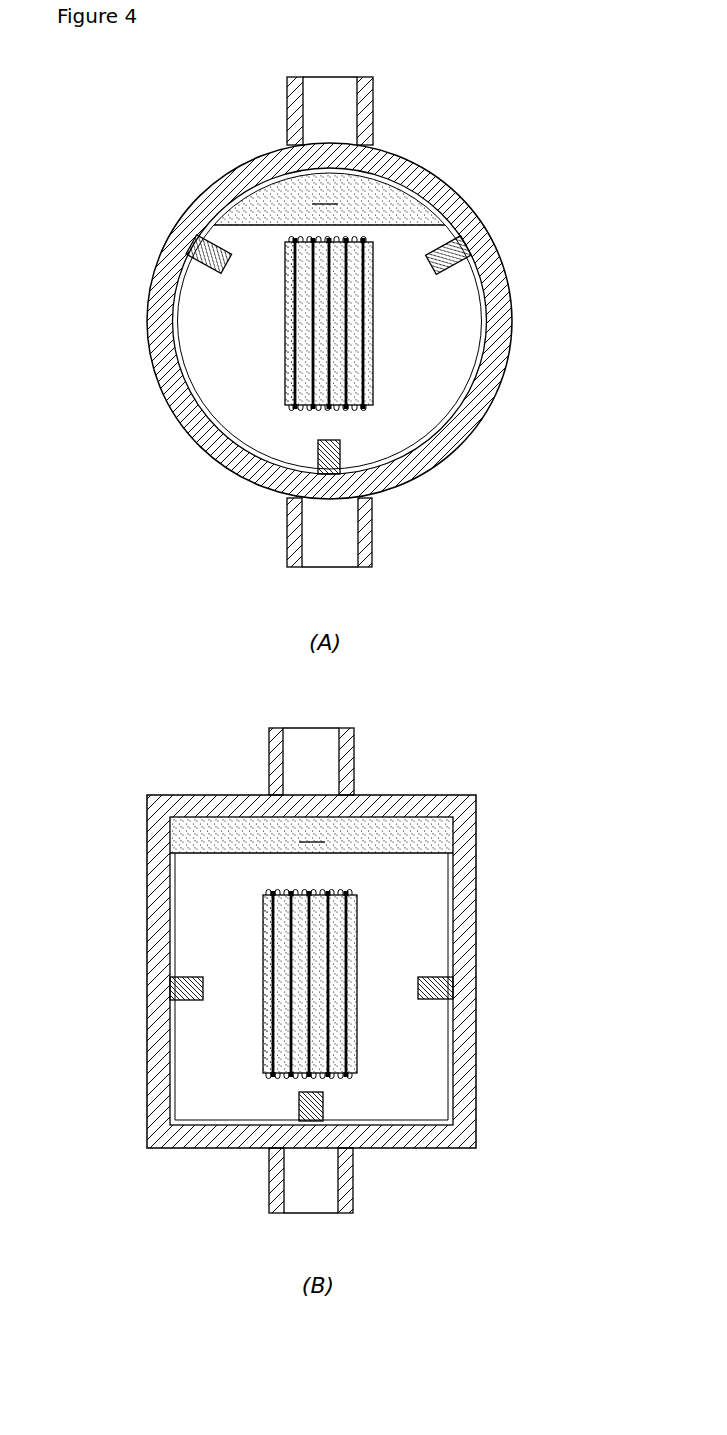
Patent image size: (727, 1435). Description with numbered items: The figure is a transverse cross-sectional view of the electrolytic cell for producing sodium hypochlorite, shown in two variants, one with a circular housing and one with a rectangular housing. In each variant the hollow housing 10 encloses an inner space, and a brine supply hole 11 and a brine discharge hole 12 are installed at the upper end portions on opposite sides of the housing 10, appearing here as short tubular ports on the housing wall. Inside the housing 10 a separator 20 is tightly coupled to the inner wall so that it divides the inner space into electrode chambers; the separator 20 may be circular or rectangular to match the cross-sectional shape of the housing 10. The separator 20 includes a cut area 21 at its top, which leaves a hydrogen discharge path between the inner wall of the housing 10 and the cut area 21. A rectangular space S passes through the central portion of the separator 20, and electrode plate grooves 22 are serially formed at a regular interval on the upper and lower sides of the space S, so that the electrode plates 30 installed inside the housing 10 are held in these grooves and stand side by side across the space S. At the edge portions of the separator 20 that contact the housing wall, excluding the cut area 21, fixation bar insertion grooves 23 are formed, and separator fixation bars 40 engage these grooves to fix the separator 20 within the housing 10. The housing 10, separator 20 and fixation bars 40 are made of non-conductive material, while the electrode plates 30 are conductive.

The housing 10 is at (207, 207).
The brine supply hole 11 is at (328, 553).
The brine discharge hole 12 is at (333, 97).
The separator 20 is at (230, 337).
The cut area 21 is at (266, 186).
The electrode plate grooves 22 is at (303, 384).
The fixation bar insertion grooves 23 is at (441, 256).
The electrode plates 30 is at (365, 347).
The separator fixation bars 40 is at (187, 244).
The rectangular space S is at (337, 317).